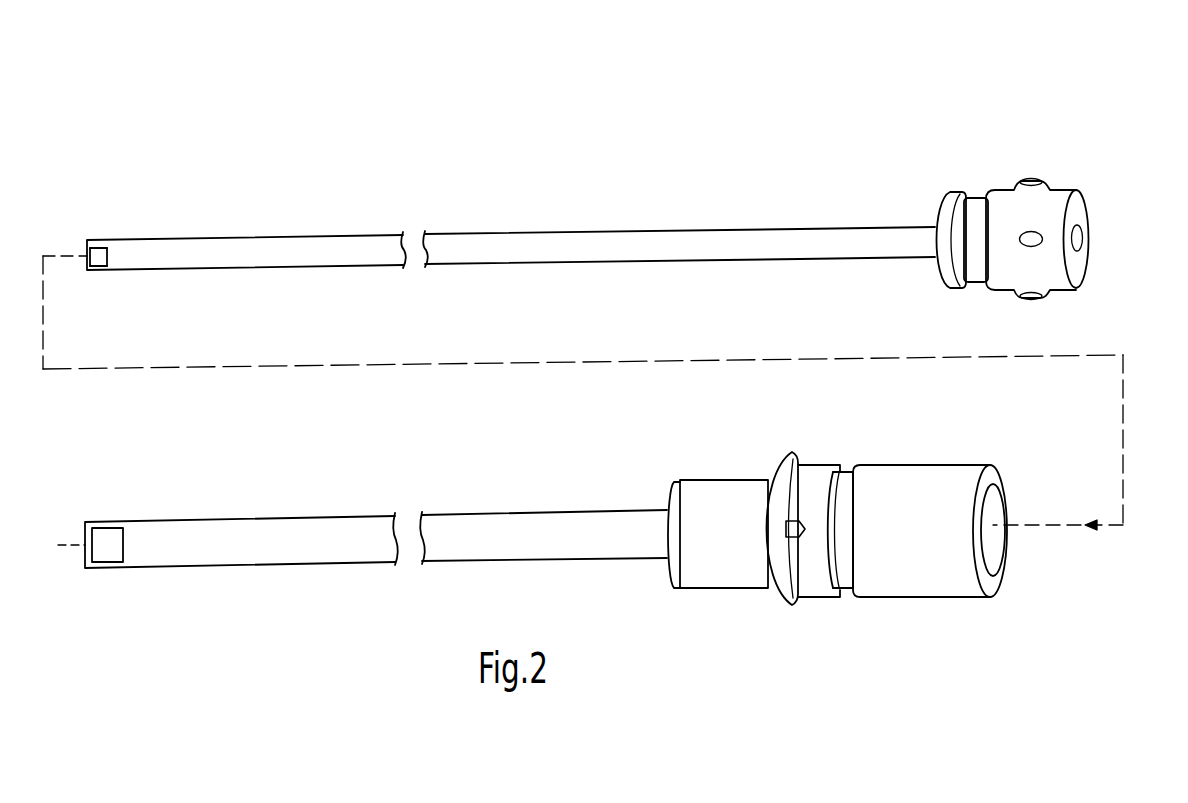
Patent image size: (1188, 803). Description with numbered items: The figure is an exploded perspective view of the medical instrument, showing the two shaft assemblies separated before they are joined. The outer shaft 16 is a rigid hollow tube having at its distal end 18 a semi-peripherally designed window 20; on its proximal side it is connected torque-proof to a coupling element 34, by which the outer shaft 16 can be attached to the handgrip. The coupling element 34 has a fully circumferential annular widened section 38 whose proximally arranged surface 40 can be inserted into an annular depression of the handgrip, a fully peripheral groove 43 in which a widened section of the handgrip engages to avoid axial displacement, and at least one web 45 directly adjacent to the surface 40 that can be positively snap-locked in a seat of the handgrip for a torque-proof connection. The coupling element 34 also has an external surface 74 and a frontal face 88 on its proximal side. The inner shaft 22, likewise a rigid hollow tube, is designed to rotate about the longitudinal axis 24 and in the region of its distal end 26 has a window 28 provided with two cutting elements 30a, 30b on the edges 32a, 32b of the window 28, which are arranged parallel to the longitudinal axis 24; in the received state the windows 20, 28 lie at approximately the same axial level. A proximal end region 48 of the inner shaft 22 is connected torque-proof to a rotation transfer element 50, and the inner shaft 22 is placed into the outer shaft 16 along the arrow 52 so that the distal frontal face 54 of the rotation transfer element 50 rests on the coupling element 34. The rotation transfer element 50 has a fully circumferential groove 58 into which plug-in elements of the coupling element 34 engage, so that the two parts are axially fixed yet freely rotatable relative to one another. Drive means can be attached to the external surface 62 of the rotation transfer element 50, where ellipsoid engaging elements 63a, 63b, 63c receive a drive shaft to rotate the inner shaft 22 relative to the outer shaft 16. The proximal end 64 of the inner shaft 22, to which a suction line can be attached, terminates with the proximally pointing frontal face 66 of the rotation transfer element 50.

The outer shaft 16 is at (362, 622).
The distal end 18 is at (148, 557).
The window 20 is at (105, 547).
The inner shaft 22 is at (511, 165).
The longitudinal axis 24 is at (1042, 528).
The distal end 26 is at (141, 253).
The window 28 is at (98, 210).
The cutting element 30a is at (92, 249).
The cutting element 30b is at (89, 267).
The edge 32a is at (101, 247).
The edge 32b is at (101, 268).
The coupling element 34 is at (846, 554).
The annular widened section 38 is at (782, 597).
The surface 40 is at (811, 538).
The groove 43 is at (850, 470).
The web 45 is at (800, 521).
The proximal end region 48 is at (903, 237).
The rotation transfer element 50 is at (1048, 173).
The arrow 52 is at (1123, 381).
The distal frontal face 54 is at (937, 202).
The groove 58 is at (970, 200).
The external surface 62 is at (1059, 184).
The engaging element 63a is at (1031, 178).
The engaging element 63b is at (1032, 236).
The engaging element 63c is at (1020, 297).
The proximal end 64 is at (1086, 218).
The frontal face 66 is at (1122, 207).
The external surface 74 is at (938, 587).
The frontal face 88 is at (990, 586).